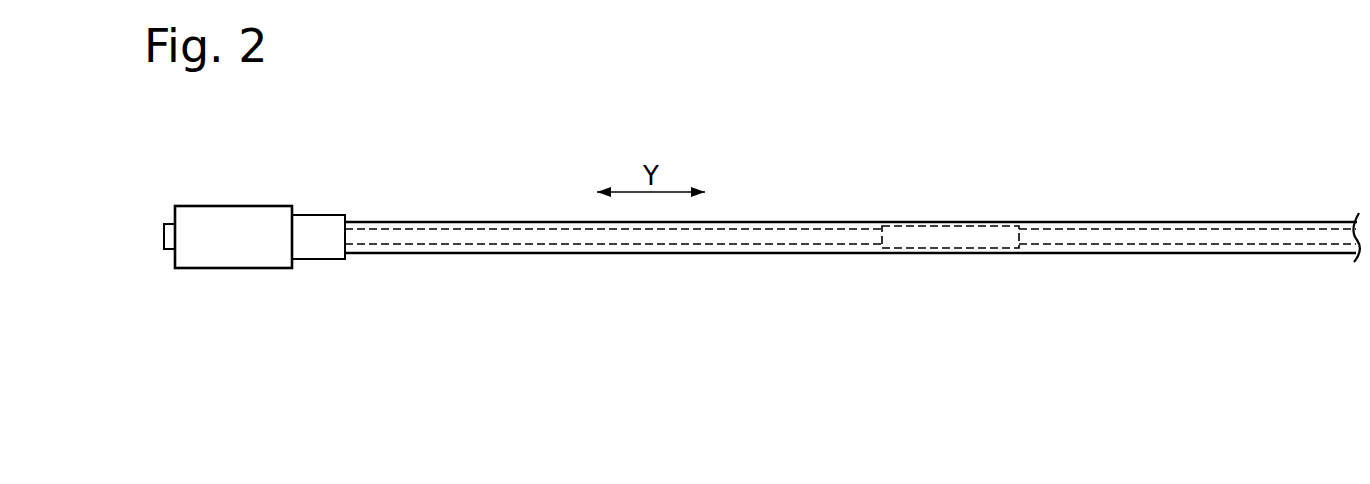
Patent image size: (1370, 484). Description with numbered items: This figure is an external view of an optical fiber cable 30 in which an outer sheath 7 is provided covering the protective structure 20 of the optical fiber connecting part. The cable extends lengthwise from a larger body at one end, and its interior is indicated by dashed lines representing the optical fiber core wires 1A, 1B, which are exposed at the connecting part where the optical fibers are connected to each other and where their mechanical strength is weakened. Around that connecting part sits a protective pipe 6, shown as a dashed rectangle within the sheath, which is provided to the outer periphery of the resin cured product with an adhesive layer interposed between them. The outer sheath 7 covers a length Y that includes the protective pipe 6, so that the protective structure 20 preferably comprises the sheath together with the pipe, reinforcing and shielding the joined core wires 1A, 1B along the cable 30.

The optical fiber cable 30 is at (707, 402).
The outer sheath 7 is at (776, 254).
The optical fiber core wire 1A is at (858, 246).
The optical fiber core wire 1B is at (1174, 246).
The protective pipe 6 is at (961, 237).
The protective structure 20 is at (958, 200).